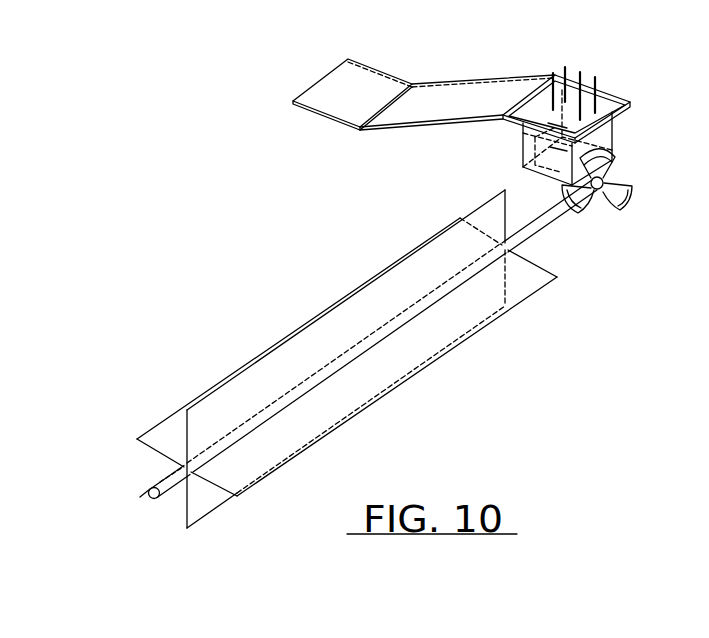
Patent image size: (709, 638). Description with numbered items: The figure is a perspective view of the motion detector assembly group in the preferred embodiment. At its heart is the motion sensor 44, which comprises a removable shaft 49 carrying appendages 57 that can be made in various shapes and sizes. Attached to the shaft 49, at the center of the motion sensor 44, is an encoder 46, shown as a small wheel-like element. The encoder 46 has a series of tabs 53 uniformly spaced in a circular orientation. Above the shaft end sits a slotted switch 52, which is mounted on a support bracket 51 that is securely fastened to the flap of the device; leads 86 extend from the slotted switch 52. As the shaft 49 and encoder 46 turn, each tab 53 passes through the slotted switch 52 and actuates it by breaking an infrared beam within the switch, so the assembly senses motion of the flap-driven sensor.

The distance sensor 44 is at (288, 469).
The encoder 46 is at (627, 181).
The shaft 49 is at (149, 493).
The support bracket 51 is at (360, 101).
The slotted switch 52 is at (612, 137).
The tab 53 is at (621, 208).
The appendages 57 is at (492, 322).
The lead 86 is at (566, 70).